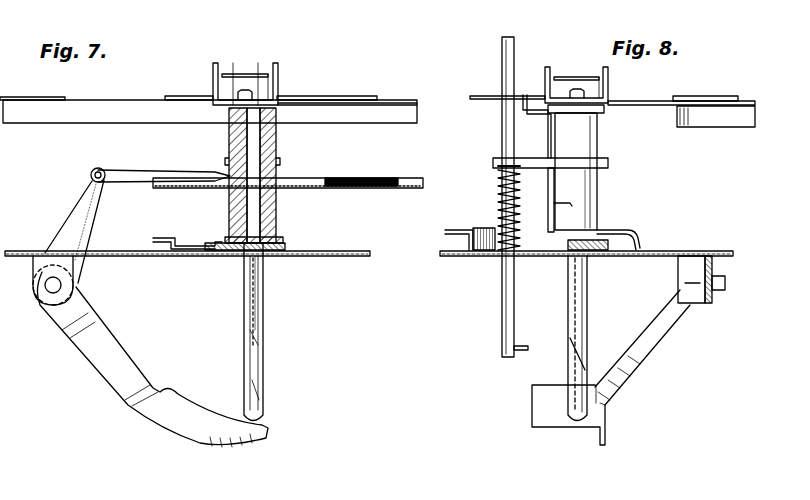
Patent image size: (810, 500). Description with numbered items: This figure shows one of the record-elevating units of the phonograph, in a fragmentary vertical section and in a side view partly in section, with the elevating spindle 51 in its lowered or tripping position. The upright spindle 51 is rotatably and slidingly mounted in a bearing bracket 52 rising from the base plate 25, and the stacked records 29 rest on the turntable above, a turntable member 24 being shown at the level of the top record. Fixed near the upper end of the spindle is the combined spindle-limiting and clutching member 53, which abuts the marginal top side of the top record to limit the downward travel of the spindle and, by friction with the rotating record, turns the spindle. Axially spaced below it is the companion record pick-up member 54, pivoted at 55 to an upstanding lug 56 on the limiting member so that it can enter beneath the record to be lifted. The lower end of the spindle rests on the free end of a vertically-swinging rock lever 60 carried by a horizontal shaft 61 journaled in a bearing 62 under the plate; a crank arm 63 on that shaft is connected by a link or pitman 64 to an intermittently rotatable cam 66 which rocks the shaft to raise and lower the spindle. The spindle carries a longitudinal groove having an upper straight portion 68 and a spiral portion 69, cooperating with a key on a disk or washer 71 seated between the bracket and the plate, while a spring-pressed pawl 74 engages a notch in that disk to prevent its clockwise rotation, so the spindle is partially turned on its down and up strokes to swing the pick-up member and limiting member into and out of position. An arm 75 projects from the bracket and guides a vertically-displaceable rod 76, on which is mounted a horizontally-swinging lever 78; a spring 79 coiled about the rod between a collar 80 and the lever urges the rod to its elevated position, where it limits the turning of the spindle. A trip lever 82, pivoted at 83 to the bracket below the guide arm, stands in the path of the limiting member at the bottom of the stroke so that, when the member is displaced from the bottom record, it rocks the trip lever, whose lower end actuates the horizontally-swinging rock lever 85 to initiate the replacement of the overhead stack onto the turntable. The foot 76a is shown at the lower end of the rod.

In FIG. 7, the bar 24 is at (99, 110).
In FIG. 8, the bar 24 is at (724, 116).
In FIG. 7, the base plate 25 is at (352, 258).
In FIG. 8, the base plate 25 is at (730, 250).
In FIG. 7, the records 29 is at (378, 96).
In FIG. 8, the records 29 is at (737, 96).
In FIG. 7, the elevating spindle 51 is at (262, 215).
In FIG. 8, the elevating spindle 51 is at (586, 322).
In FIG. 7, the bearing bracket 52 is at (278, 156).
In FIG. 8, the bearing bracket 52 is at (598, 188).
In FIG. 7, the combined spindle-limiting and clutching member 53 is at (186, 96).
In FIG. 8, the combined spindle-limiting and clutching member 53 is at (490, 96).
In FIG. 7, the record pick-up member 54 is at (338, 106).
In FIG. 8, the record pick-up member 54 is at (645, 106).
In FIG. 7, the pivot 55 is at (245, 70).
In FIG. 8, the pivot 55 is at (577, 72).
In FIG. 7, the upstanding lug 56 is at (273, 86).
In FIG. 8, the upstanding lug 56 is at (603, 86).
In FIG. 7, the rock lever 60 is at (170, 432).
In FIG. 8, the rock lever 60 is at (644, 344).
In FIG. 7, the horizontal shaft 61 is at (48, 290).
In FIG. 8, the horizontal shaft 61 is at (726, 286).
In FIG. 7, the bearing 62 is at (74, 284).
In FIG. 8, the bearing 62 is at (712, 300).
In FIG. 7, the crank arm 63 is at (70, 216).
In FIG. 7, the link or pitman 64 is at (169, 170).
In FIG. 7, the cam 66 is at (380, 176).
In FIG. 7, the straight portion of groove 68 is at (263, 292).
In FIG. 8, the straight portion of groove 68 is at (573, 290).
In FIG. 7, the spiral portion of groove 69 is at (262, 400).
In FIG. 8, the spiral portion of groove 69 is at (578, 366).
In FIG. 7, the disk or washer 71 is at (286, 243).
In FIG. 8, the disk or washer 71 is at (600, 257).
In FIG. 7, the pawl 74 is at (204, 240).
In FIG. 8, the arm 75 is at (493, 163).
In FIG. 8, the rod 76 is at (500, 268).
In FIG. 8, the foot 76a is at (515, 352).
In FIG. 8, the lever 78 is at (455, 236).
In FIG. 8, the spring 79 is at (497, 210).
In FIG. 8, the collar 80 is at (498, 170).
In FIG. 8, the trip lever 82 is at (548, 136).
In FIG. 8, the pivot 83 is at (548, 195).
In FIG. 8, the rock lever 85 is at (636, 228).